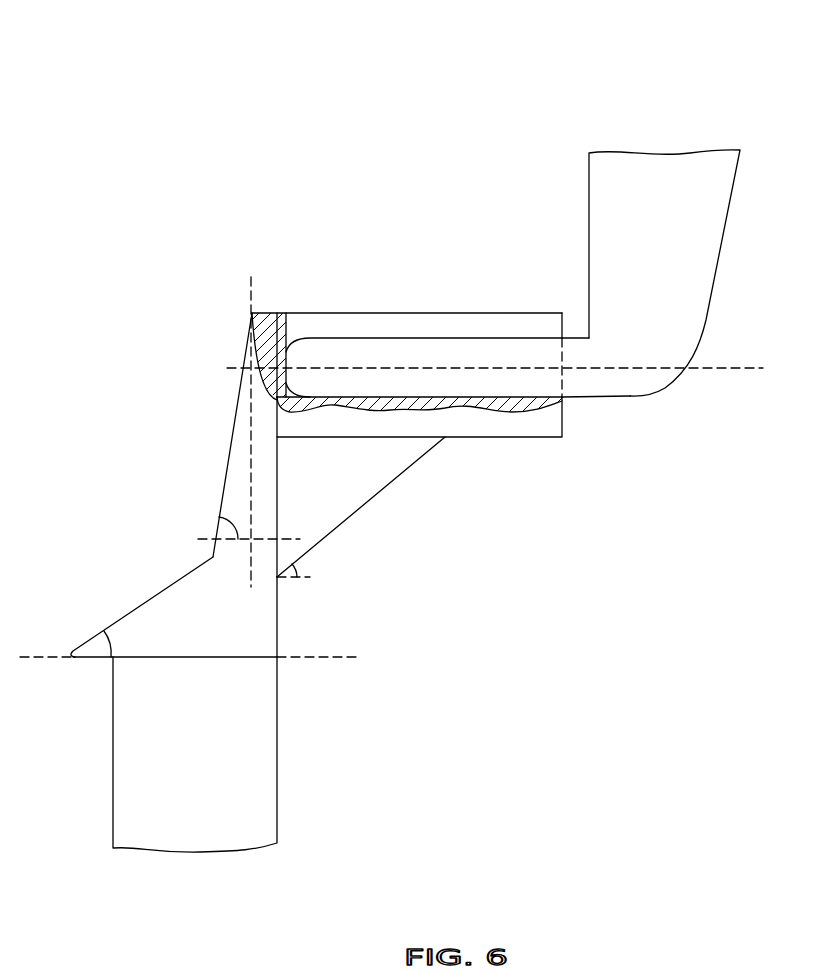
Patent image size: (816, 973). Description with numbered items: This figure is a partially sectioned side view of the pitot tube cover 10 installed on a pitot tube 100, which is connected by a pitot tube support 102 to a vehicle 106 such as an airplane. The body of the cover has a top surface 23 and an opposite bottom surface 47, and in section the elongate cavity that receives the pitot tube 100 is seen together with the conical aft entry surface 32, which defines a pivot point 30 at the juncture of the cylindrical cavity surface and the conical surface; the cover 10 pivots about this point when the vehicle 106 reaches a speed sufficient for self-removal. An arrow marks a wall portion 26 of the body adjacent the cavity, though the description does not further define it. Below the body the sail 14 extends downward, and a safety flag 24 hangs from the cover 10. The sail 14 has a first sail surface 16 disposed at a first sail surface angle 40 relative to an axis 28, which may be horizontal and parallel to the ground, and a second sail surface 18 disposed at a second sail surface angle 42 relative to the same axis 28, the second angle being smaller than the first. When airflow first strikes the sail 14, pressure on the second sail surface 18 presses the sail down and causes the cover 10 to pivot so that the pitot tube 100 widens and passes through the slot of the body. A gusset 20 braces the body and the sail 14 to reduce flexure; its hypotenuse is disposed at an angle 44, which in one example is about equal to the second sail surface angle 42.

The pitot tube cover 10 is at (186, 333).
The sail 14 is at (162, 488).
The first sail surface 16 is at (232, 430).
The second sail surface 18 is at (146, 598).
The gusset 20 is at (373, 489).
The top surface 23 is at (487, 312).
The safety flag 24 is at (265, 777).
The channel end wall 26 is at (284, 313).
The axis 28 is at (725, 372).
The pivot point 30 is at (535, 397).
The conical aft entry surface 32 is at (548, 335).
The first sail surface angle 40 is at (240, 522).
The second sail surface angle 42 is at (108, 627).
The angle 44 is at (300, 568).
The bottom surface 47 is at (480, 440).
The pitot tube 100 is at (497, 380).
The pitot tube support 102 is at (712, 223).
The vehicle 106 is at (639, 105).